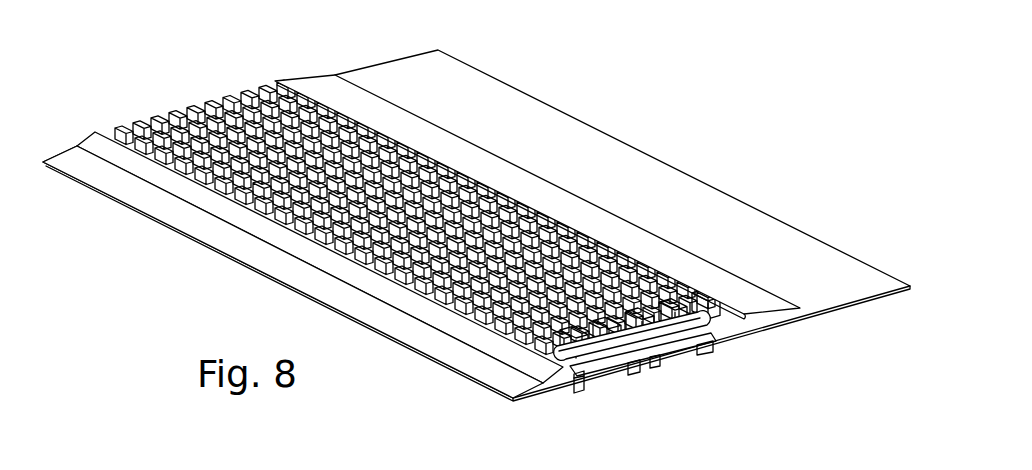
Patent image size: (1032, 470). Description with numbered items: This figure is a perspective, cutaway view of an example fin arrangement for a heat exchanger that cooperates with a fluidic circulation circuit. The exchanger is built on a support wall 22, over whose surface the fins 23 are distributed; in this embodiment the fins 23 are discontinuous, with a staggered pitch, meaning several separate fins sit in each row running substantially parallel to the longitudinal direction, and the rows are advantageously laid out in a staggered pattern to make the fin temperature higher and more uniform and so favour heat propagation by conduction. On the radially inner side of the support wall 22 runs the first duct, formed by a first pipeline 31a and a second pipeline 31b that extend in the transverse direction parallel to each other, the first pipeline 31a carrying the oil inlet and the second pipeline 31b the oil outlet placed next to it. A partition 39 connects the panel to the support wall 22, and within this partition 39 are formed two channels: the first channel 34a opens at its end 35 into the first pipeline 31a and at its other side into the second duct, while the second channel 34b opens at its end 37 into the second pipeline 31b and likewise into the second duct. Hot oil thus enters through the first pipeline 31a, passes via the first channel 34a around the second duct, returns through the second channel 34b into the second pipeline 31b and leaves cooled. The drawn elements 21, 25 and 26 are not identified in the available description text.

The heat sink 21 is at (693, 122).
The support wall 22 is at (537, 121).
The fins 23 is at (226, 88).
The first side flange 25 is at (76, 136).
The second side flange 26 is at (318, 78).
The partition 39 is at (708, 326).
The first pipeline 31a is at (688, 362).
The second pipeline 31b is at (642, 381).
The first channel 34a is at (703, 355).
The second channel 34b is at (577, 362).
The end 35 is at (674, 368).
The end 37 is at (607, 385).